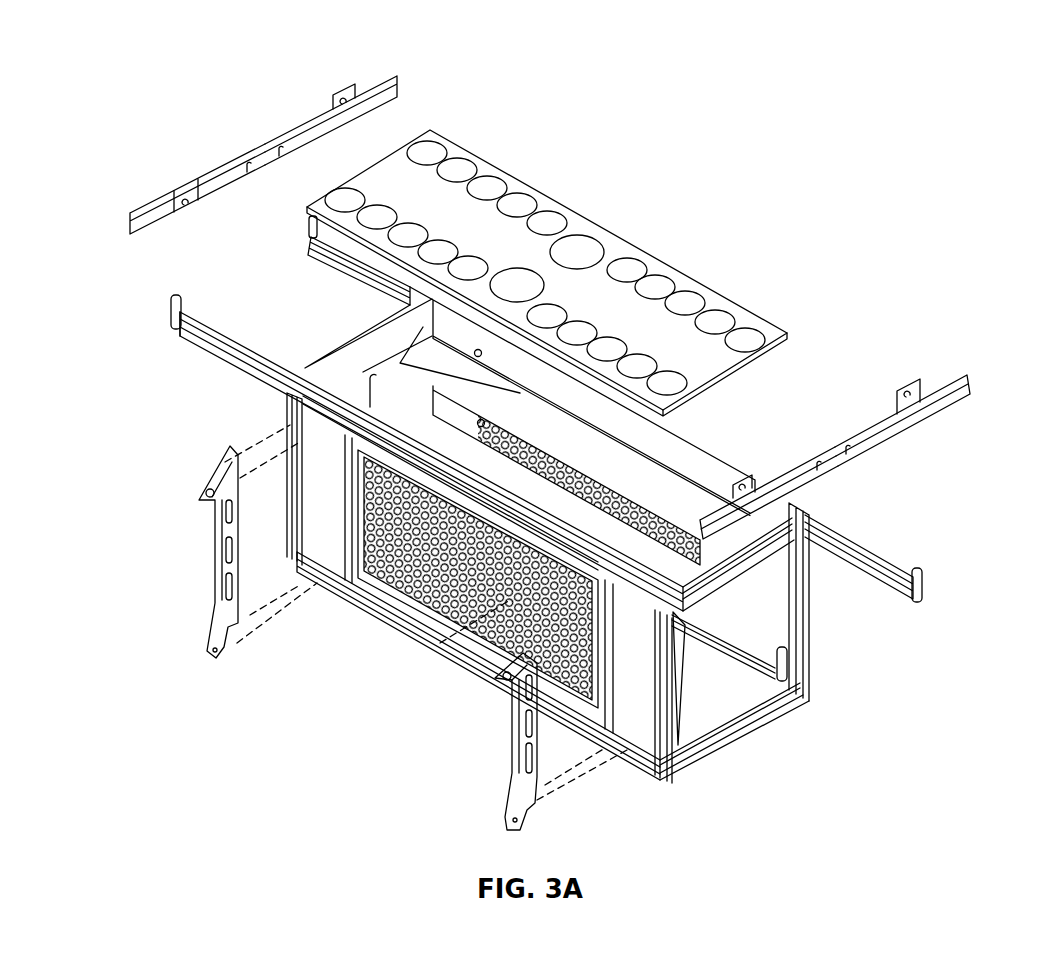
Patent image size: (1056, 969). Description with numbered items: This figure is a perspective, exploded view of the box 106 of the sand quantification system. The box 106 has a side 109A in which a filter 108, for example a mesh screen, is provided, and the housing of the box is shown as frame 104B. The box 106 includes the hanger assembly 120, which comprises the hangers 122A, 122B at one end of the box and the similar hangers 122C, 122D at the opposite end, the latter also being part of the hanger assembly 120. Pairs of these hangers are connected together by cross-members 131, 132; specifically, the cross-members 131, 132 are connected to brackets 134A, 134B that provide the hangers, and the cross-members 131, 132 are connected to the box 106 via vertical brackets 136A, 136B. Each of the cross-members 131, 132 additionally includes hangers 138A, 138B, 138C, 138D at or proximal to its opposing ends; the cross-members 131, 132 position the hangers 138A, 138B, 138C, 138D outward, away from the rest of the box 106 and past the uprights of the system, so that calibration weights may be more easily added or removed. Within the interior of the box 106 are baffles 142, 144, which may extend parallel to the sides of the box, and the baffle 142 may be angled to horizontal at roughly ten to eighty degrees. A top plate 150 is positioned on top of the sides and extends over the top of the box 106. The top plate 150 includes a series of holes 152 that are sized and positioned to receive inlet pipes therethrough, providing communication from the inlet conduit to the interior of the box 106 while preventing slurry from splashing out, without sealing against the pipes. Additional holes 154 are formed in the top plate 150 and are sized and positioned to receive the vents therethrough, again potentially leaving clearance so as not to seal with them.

The housing frame 104B is at (797, 583).
The box 106 is at (690, 196).
The filters 108 is at (407, 610).
The side 109A is at (447, 652).
The hanger assembly 120 is at (893, 306).
The hanger 122A is at (718, 517).
The hanger 122B is at (950, 376).
The hanger 122C is at (140, 222).
The hanger 122D is at (383, 80).
The cross-member 131 is at (240, 350).
The cross-member 132 is at (890, 565).
The bracket 134A is at (885, 402).
The bracket 134B is at (233, 150).
The vertical bracket 136A is at (537, 757).
The vertical bracket 136B is at (212, 555).
The hanger 138A is at (795, 670).
The hanger 138B is at (913, 608).
The hanger 138C is at (173, 304).
The hanger 138D is at (308, 230).
The baffle 142 is at (676, 483).
The baffle 144 is at (350, 352).
The top plate 150 is at (782, 326).
The holes 152 is at (458, 165).
The holes 154 is at (585, 236).